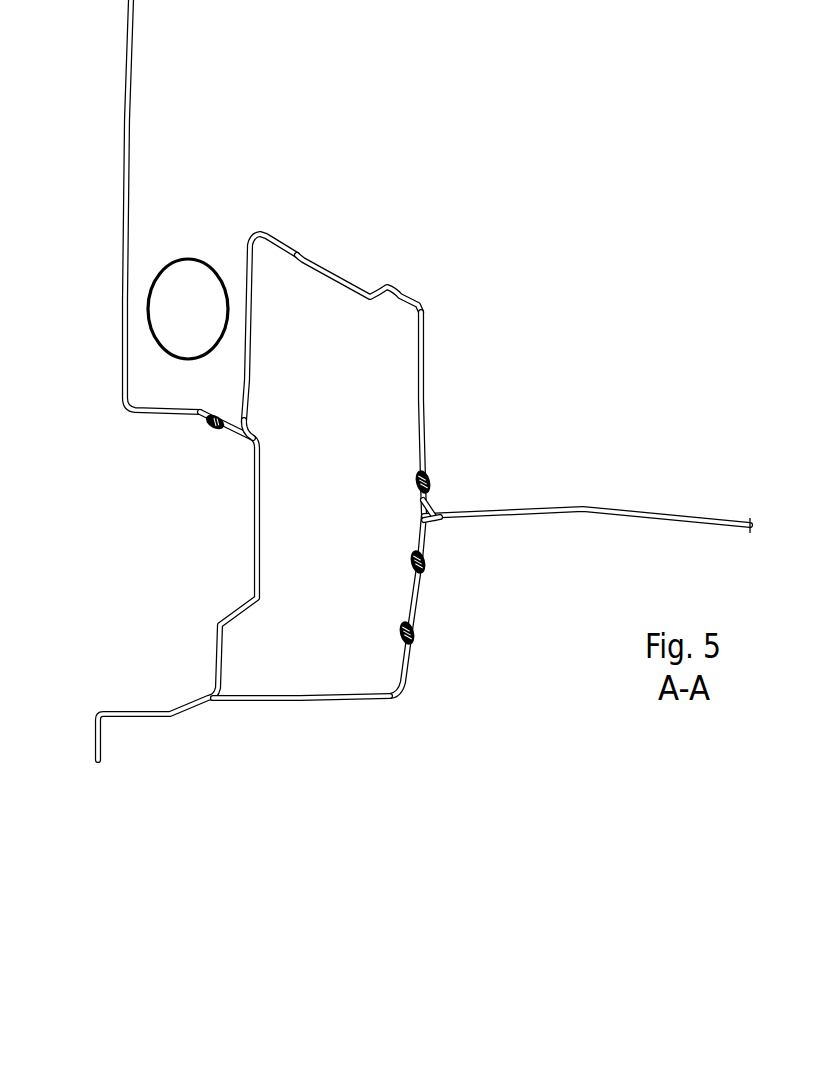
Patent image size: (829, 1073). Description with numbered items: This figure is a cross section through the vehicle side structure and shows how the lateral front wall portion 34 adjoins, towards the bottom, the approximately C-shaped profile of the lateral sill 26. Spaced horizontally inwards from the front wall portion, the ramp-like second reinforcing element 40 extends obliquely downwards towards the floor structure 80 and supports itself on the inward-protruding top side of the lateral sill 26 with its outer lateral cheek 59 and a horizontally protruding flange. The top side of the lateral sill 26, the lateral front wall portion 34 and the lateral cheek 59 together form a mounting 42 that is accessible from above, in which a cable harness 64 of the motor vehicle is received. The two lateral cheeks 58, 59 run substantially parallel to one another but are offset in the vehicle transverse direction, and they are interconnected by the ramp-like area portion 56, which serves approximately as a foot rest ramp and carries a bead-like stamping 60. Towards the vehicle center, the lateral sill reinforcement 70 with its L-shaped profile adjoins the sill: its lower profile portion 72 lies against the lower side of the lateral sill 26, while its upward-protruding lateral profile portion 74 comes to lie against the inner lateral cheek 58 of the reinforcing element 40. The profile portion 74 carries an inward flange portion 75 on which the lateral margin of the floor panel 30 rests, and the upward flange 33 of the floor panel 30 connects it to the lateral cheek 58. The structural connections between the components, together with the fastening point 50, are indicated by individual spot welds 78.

The lateral sill 26 is at (155, 414).
The floor panel 30 is at (582, 512).
The flange 33 is at (428, 460).
The lateral front wall portion 34 is at (128, 300).
The second reinforcing element 40 is at (374, 377).
The mounting 42 is at (142, 206).
The fastener 50 is at (204, 413).
The area portion 56 is at (281, 240).
The lateral cheek 58 is at (423, 353).
The lateral cheek 59 is at (250, 350).
The bead like stamping 60 is at (337, 282).
The cable harness 64 is at (187, 272).
The lateral sill reinforcement 70 is at (374, 739).
The lower profile portion 72 is at (273, 700).
The lateral profile portion 74 is at (412, 610).
The flange portion 75 is at (460, 522).
The spot welds 78 is at (346, 513).
The floor structure 80 is at (586, 692).